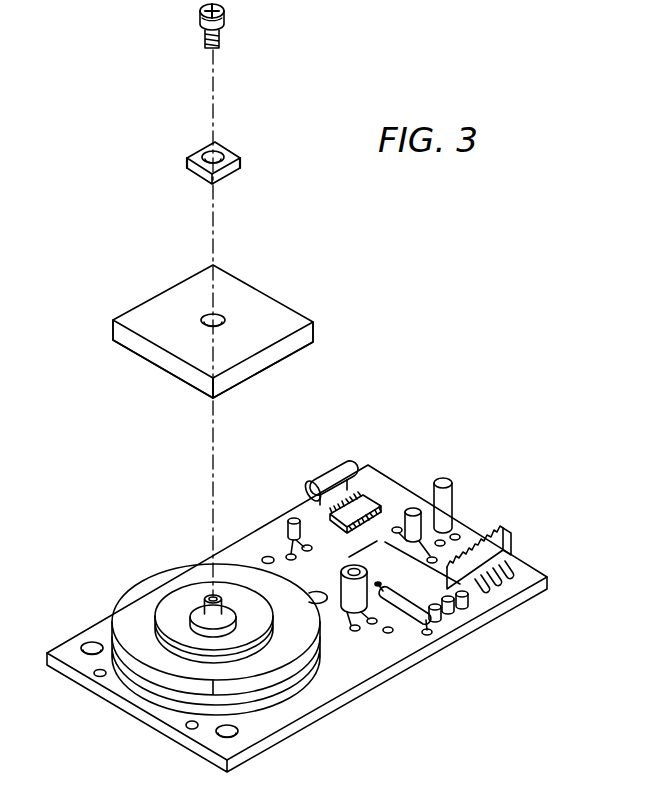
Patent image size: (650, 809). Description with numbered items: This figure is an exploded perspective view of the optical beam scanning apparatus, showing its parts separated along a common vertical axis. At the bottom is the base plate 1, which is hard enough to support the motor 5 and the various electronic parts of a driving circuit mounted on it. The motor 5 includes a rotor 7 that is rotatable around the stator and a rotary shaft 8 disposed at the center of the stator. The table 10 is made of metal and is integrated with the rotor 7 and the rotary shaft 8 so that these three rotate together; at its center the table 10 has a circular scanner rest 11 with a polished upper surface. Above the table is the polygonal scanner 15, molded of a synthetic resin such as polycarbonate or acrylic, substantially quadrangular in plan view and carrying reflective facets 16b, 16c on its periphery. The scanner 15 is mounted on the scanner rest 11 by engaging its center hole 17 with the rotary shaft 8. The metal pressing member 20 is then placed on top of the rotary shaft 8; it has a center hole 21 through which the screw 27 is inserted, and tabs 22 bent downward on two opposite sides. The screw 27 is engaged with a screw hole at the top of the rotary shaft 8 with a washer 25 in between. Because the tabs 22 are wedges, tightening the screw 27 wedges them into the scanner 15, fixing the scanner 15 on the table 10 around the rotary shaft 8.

The base plate 1 is at (328, 715).
The motor 5 is at (285, 721).
The rotor 7 is at (150, 695).
The rotary shaft 8 is at (228, 593).
The table 10 is at (130, 610).
The scanner rest 11 is at (185, 595).
The polygonal scanner 15 is at (226, 334).
The reflective facet 16b is at (280, 353).
The reflective facet 16c is at (135, 343).
The center hole 17 is at (205, 317).
The pressing member 20 is at (230, 147).
The center hole 21 is at (210, 147).
The tabs 22 is at (240, 167).
The washer 25 is at (225, 13).
The screw 27 is at (221, 40).